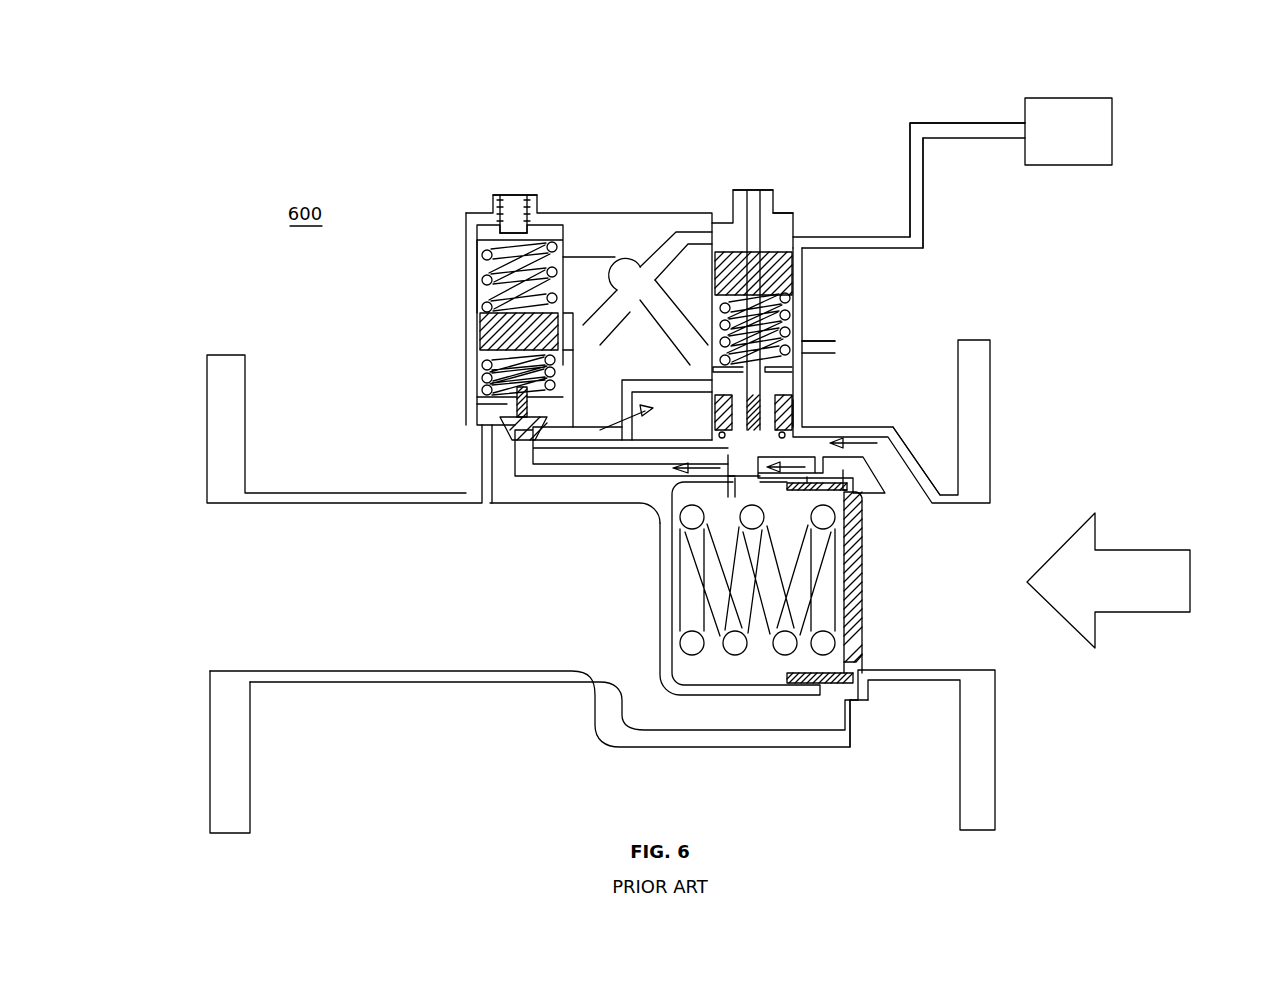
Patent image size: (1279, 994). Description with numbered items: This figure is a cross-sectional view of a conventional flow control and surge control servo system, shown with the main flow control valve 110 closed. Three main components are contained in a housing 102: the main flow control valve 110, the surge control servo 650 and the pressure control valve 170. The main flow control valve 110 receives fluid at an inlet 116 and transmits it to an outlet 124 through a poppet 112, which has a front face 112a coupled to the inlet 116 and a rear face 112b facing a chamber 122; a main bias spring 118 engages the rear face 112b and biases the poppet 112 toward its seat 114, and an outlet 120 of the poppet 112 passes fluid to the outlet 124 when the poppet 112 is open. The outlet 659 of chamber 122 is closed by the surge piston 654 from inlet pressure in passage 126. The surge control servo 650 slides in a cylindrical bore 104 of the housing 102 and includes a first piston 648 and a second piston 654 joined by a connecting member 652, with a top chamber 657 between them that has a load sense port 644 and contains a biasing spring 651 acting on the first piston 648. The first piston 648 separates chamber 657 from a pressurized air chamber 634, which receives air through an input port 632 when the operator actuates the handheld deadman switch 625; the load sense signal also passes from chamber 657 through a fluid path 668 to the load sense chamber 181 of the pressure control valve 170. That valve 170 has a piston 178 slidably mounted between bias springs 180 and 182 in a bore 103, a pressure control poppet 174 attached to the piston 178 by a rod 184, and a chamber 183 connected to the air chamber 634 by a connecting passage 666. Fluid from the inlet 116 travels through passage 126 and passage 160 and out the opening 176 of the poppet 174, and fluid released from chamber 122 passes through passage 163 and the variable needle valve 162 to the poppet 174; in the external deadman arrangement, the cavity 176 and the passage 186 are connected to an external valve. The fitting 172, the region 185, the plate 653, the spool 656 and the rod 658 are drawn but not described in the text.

The housing 102 is at (612, 213).
The bore 103 is at (545, 233).
The cylindrical bore 104 is at (796, 232).
The main flow control valve 110 is at (878, 613).
The poppet 112 is at (865, 569).
The front face 112a is at (858, 541).
The rear face 112b is at (813, 684).
The seat 114 is at (893, 636).
The inlet 116 is at (1017, 513).
The main bias spring 118 is at (727, 657).
The outlet 120 is at (838, 725).
The chamber 122 is at (667, 537).
The outlet 124 is at (262, 588).
The passage 126 is at (882, 453).
The passage 160 is at (603, 476).
The variable needle valve 162 is at (608, 423).
The passage 163 is at (688, 397).
The pressure control valve 170 is at (565, 165).
The fitting 172 is at (523, 200).
The pressure control poppet 174 is at (503, 437).
The opening 176 is at (490, 427).
The piston 178 is at (478, 335).
The bias spring 180 is at (483, 368).
The load sense chamber 181 is at (480, 248).
The bias spring 182 is at (481, 280).
The chamber 183 is at (574, 340).
The rod 184 is at (530, 410).
The chamber floor 185 is at (483, 395).
The passage 186 is at (483, 498).
The handheld deadman switch 625 is at (1060, 98).
The input port 632 is at (910, 125).
The pressurized air chamber 634 is at (780, 208).
The load sense port 644 is at (830, 347).
The first piston 648 is at (777, 230).
The surge control servo 650 is at (815, 270).
The biasing spring 651 is at (793, 316).
The connecting member 652 is at (783, 385).
The plate 653 is at (790, 357).
The second piston 654 is at (788, 412).
The spool 656 is at (723, 388).
The top chamber 657 is at (717, 342).
The rod 658 is at (740, 428).
The outlet 659 is at (743, 470).
The connecting passage 666 is at (670, 235).
The fluid path 668 is at (662, 314).